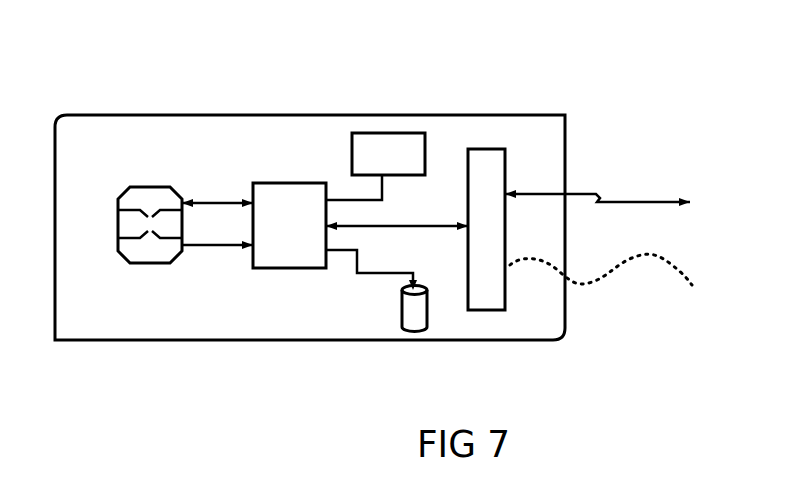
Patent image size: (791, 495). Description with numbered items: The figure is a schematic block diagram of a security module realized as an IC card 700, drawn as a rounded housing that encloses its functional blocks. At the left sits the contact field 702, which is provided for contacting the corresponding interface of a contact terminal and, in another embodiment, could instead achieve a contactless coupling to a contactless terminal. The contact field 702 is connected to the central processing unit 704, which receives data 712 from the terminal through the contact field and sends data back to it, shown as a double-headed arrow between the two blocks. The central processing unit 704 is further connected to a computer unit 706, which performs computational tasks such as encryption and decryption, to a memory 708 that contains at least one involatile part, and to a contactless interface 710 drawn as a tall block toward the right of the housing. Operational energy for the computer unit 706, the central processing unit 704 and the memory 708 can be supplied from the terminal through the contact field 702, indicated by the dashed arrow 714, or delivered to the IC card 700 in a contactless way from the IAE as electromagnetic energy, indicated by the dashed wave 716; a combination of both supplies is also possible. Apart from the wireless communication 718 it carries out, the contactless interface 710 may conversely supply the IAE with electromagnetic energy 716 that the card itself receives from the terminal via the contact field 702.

The IC card 700 is at (415, 55).
The contact field 702 is at (157, 186).
The central processing unit 704 is at (287, 183).
The computer unit 706 is at (425, 152).
The memory 708 is at (402, 311).
The contactless interface 710 is at (505, 162).
The data 712 is at (207, 203).
The dashed arrow 714 is at (203, 246).
The dashed wave 716 is at (613, 272).
The wireless communication 718 is at (653, 202).